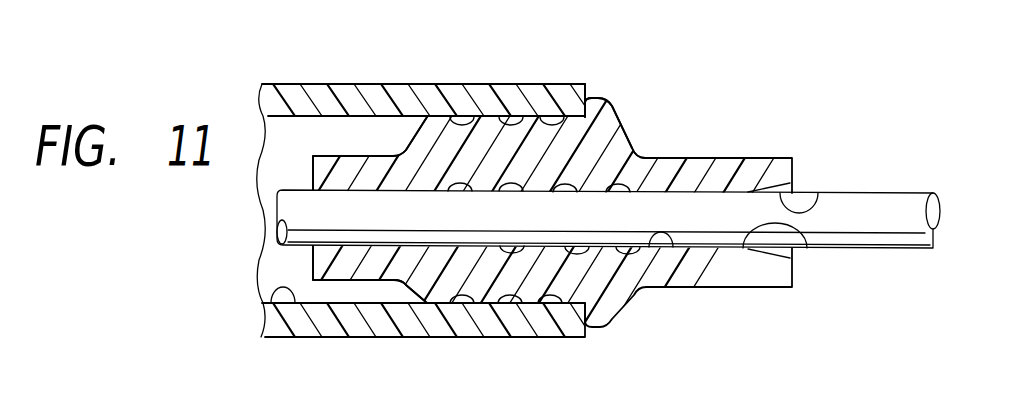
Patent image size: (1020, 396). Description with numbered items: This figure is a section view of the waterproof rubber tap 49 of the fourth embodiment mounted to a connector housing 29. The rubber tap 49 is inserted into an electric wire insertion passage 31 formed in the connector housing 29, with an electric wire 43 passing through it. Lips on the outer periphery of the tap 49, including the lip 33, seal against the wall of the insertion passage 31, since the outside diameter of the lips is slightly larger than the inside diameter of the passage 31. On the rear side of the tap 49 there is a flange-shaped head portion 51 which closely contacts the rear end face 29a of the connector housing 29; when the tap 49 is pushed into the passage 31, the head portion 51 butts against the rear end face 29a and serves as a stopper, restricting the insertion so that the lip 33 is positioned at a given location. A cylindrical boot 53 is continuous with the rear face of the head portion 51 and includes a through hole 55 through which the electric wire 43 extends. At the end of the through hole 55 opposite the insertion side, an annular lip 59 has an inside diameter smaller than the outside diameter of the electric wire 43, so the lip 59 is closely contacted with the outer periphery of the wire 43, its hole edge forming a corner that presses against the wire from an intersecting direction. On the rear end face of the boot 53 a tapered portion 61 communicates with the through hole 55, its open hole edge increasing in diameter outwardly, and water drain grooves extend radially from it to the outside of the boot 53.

The connector housing 29 is at (430, 84).
The rear end face 29a is at (588, 84).
The electric wire insertion passage 31 is at (274, 286).
The lip 33 is at (547, 84).
The electric wire 43 is at (897, 200).
The waterproof rubber tap 49 is at (375, 132).
The flange-shaped head portion 51 is at (618, 110).
The boot 53 is at (735, 158).
The through hole 55 is at (652, 248).
The annular lip 59 is at (807, 248).
The tapered portion 61 is at (818, 193).